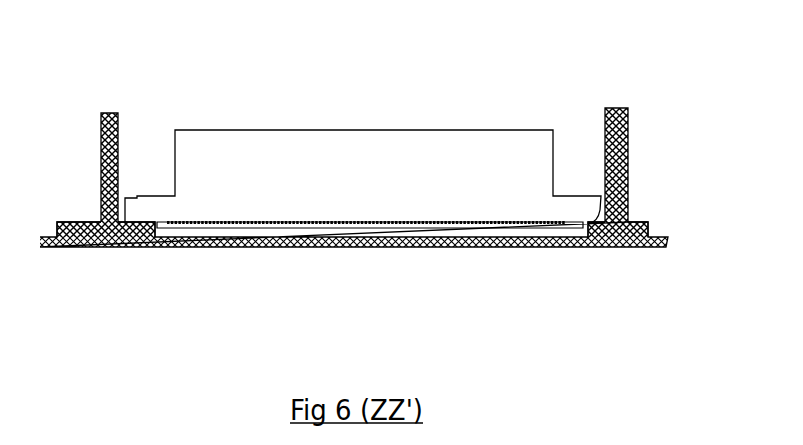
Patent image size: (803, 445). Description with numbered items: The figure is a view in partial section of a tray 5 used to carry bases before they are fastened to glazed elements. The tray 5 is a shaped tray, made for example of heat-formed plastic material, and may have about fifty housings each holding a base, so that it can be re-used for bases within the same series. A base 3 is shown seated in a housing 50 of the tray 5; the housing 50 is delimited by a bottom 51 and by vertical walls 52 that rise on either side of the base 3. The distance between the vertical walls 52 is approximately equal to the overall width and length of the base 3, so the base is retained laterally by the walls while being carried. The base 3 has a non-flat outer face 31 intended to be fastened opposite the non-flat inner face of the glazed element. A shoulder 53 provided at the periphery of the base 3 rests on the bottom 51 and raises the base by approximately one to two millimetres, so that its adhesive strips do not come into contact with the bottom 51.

The base 3 is at (257, 128).
The tray 5 is at (662, 142).
The housing 50 is at (145, 108).
The bottom 51 is at (525, 242).
The vertical walls 52 is at (614, 108).
The shoulder 53 is at (143, 227).
The non-flat outer face 31 is at (593, 249).